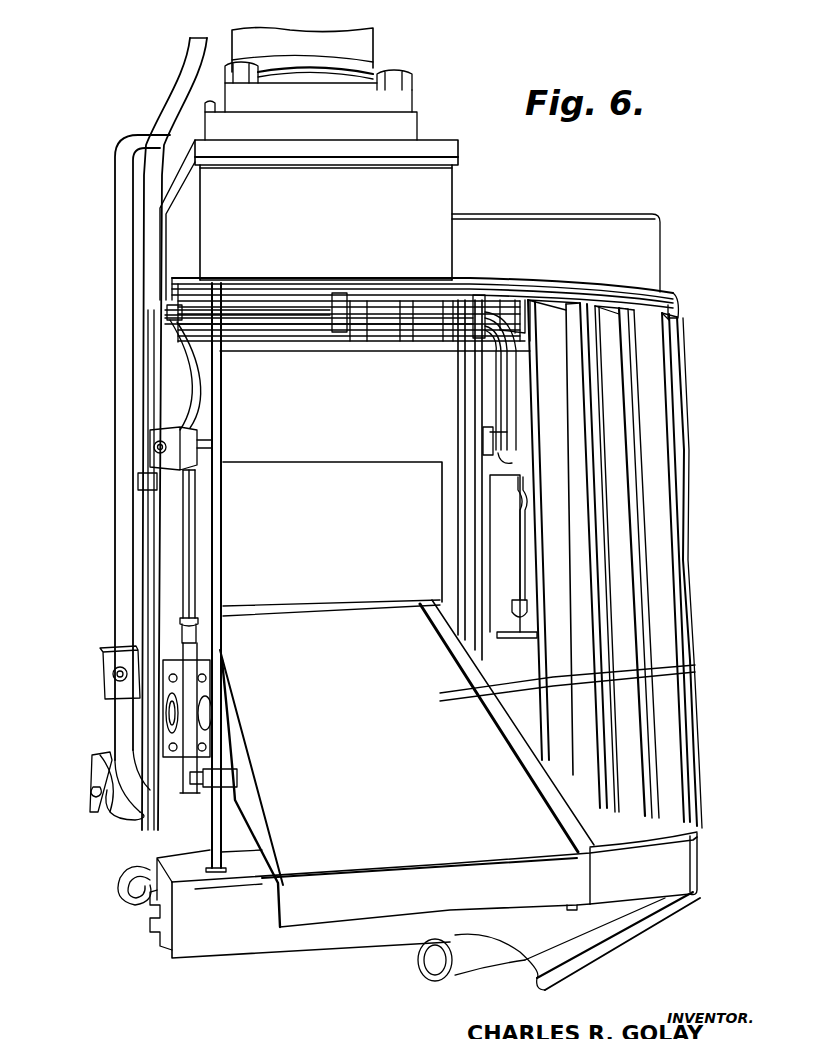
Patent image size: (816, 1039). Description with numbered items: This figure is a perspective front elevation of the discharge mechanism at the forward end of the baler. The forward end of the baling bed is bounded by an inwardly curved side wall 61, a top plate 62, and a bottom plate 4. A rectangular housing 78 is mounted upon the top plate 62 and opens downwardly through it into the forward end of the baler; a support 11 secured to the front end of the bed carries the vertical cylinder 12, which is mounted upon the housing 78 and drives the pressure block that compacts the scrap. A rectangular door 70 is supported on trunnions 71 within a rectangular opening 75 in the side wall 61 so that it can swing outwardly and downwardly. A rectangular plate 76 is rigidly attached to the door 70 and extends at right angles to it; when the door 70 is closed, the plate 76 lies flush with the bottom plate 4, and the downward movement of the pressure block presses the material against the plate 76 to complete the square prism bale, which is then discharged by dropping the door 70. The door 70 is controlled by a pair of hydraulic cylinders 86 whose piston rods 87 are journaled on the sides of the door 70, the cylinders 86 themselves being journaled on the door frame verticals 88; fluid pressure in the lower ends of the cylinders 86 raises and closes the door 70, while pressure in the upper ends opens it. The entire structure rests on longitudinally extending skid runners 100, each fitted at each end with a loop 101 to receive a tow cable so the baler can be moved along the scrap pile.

The bottom plate 4 is at (700, 830).
The support 11 is at (342, 191).
The vertical cylinder 12 is at (362, 52).
The side wall 61 is at (603, 607).
The top plate 62 is at (640, 290).
The rectangular door 70 is at (358, 860).
The trunnions 71 is at (168, 715).
The rectangular opening 75 is at (297, 442).
The rectangular plate 76 is at (363, 483).
The rectangular housing 78 is at (433, 200).
The hydraulic cylinders 86 is at (177, 547).
The piston rods 87 is at (193, 760).
The door frame verticals 88 is at (215, 427).
The skid runners 100 is at (637, 938).
The loop 101 is at (118, 889).